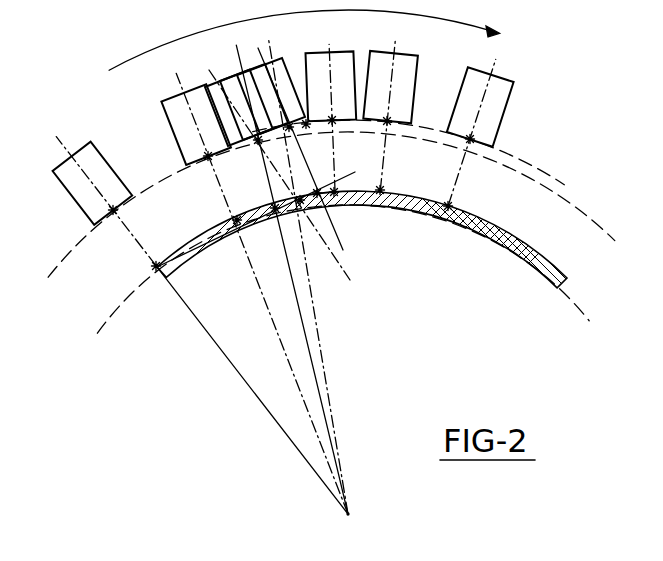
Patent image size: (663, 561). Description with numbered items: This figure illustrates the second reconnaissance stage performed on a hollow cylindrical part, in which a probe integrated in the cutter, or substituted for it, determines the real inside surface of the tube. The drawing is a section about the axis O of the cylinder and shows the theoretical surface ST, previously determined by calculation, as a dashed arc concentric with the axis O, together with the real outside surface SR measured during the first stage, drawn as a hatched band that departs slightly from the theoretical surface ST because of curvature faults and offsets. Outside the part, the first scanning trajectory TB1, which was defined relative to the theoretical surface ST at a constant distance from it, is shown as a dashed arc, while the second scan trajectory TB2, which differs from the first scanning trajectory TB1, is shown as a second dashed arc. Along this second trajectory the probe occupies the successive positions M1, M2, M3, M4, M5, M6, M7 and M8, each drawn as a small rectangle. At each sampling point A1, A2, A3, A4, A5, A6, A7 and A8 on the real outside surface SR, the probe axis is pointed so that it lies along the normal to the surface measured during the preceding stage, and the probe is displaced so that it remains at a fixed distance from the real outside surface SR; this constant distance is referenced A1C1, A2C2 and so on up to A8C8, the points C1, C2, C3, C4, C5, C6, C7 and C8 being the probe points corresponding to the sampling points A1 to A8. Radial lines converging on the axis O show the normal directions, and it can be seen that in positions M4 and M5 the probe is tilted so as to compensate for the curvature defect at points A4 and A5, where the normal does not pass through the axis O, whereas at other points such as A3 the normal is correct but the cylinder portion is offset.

The probe position M1 is at (72, 162).
The probe position M2 is at (184, 90).
The probe position M3 is at (234, 52).
The probe position M4 is at (224, 76).
The probe position M5 is at (284, 52).
The probe position M6 is at (342, 51).
The probe position M7 is at (405, 54).
The probe position M8 is at (502, 79).
The probe point C1 is at (131, 225).
The probe point C2 is at (204, 173).
The probe point C3 is at (246, 162).
The probe point C4 is at (289, 148).
The probe point C5 is at (320, 145).
The probe point C6 is at (353, 137).
The probe point C7 is at (404, 138).
The probe point C8 is at (486, 157).
The sampling point A1 is at (144, 269).
The sampling point A2 is at (224, 219).
The sampling point A3 is at (265, 200).
The sampling point A4 is at (304, 184).
The sampling point A5 is at (326, 177).
The sampling point A6 is at (353, 179).
The sampling point A7 is at (397, 180).
The sampling point A8 is at (465, 195).
The first scanning trajectory TB1 is at (584, 210).
The second scan trajectory TB2 is at (564, 185).
The real outside surface SR is at (505, 233).
The theoretical surface ST is at (575, 303).
The axis of the cylinder O is at (361, 514).